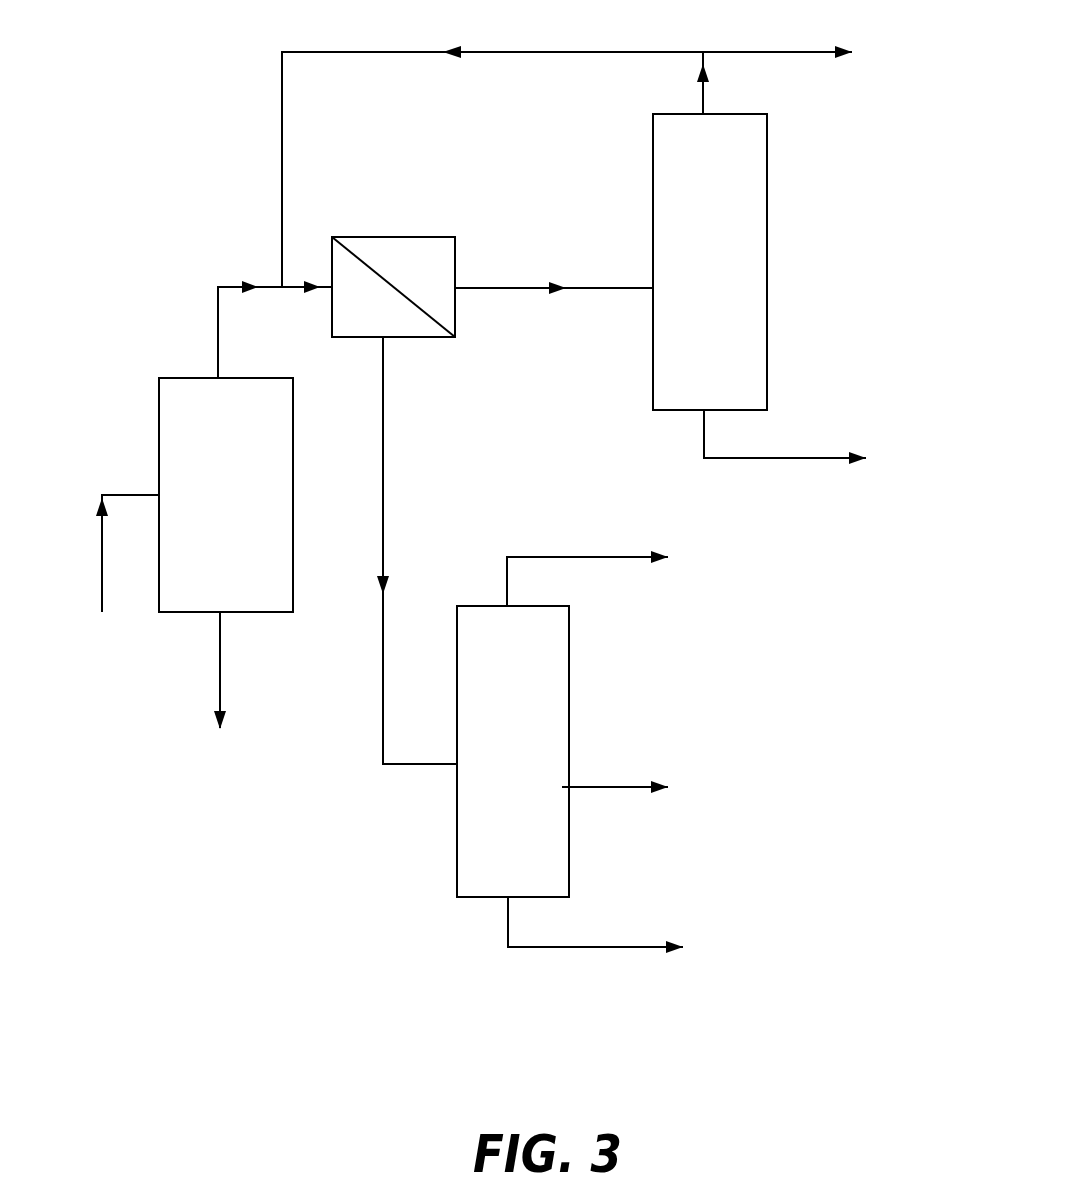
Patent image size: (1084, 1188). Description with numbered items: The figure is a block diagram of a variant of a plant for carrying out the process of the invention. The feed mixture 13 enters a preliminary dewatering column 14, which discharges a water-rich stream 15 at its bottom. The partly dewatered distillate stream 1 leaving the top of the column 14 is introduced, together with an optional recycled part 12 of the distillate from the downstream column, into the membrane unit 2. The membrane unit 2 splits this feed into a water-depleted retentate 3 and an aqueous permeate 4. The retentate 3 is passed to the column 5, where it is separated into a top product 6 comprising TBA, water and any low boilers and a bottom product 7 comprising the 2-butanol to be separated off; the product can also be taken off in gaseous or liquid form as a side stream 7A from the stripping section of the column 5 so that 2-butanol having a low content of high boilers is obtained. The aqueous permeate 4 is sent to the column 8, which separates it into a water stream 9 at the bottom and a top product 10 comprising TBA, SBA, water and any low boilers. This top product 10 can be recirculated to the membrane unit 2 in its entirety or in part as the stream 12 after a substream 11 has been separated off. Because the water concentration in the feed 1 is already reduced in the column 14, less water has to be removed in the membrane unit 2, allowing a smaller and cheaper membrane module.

The distillate stream 1 is at (241, 315).
The membrane unit 2 is at (393, 287).
The water-depleted retentate 3 is at (398, 550).
The aqueous permeate 4 is at (554, 324).
The column 5 is at (513, 751).
The top product 6 is at (621, 569).
The bottom product 7 is at (623, 925).
The side stream 7A is at (659, 801).
The column 8 is at (710, 262).
The water stream 9 is at (812, 450).
The top product 10 is at (653, 86).
The substream 11 is at (820, 57).
The part of the distillate 12 is at (492, 143).
The feed mixture 13 is at (118, 594).
The column 14 is at (226, 495).
The water-rich stream 15 is at (217, 711).